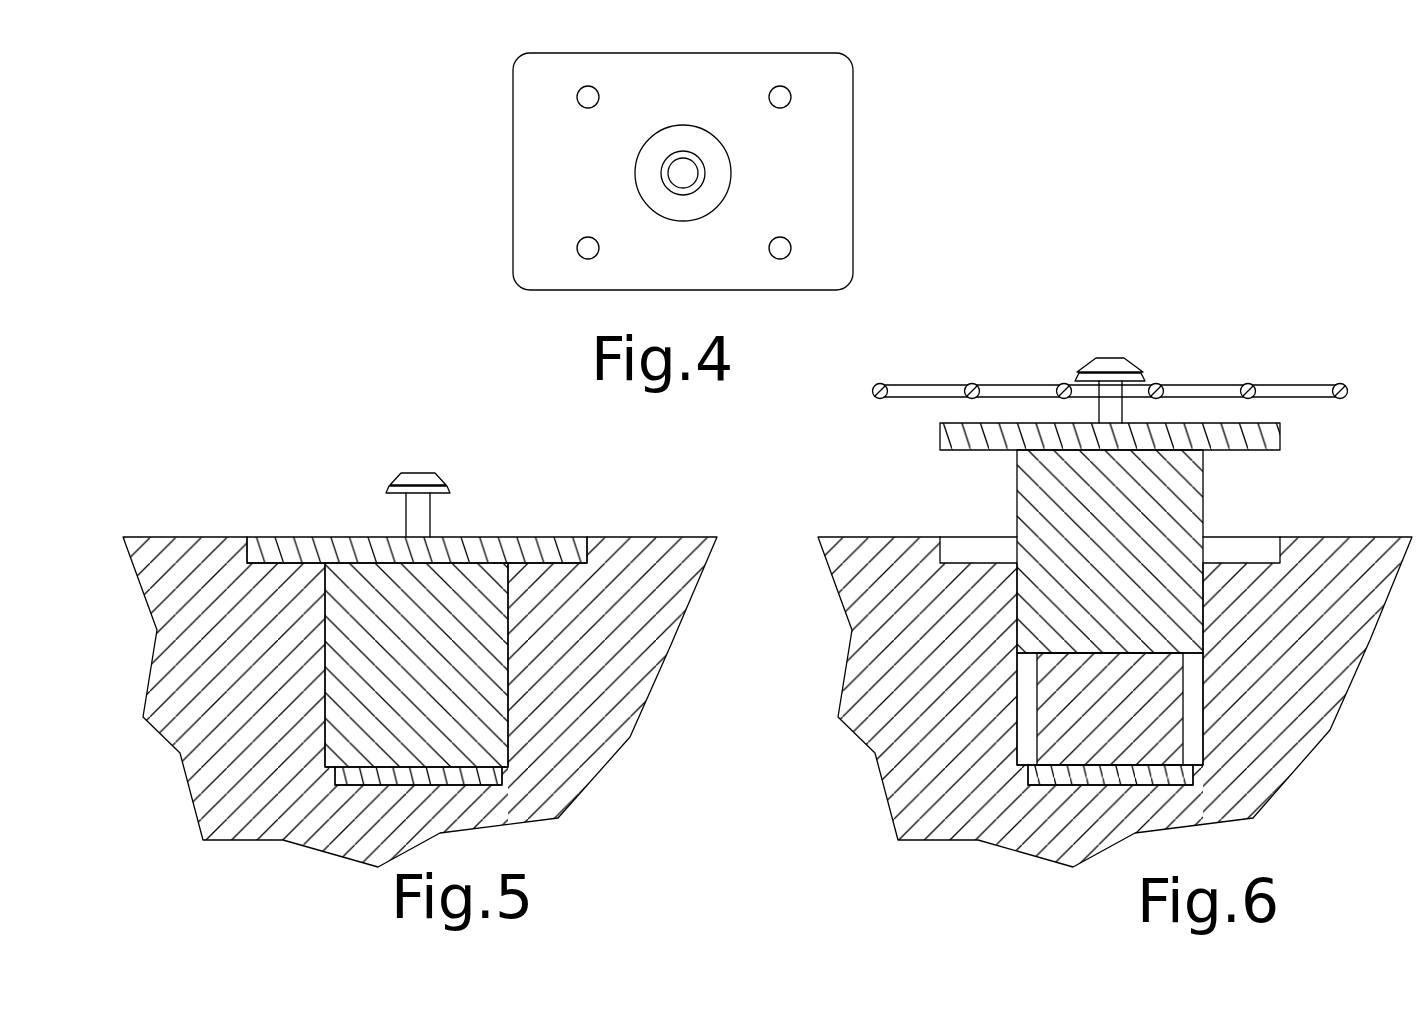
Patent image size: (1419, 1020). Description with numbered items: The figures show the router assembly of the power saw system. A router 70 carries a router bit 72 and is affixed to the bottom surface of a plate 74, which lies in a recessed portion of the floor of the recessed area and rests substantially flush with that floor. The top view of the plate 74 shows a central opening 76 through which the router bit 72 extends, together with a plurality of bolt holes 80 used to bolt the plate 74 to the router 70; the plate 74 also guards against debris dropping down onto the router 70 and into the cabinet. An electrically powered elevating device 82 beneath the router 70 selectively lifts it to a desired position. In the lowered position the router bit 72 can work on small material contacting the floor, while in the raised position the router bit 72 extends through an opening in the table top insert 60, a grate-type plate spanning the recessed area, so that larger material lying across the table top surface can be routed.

In FIG. 6, the table top insert 60 is at (1288, 388).
In FIG. 5, the router 70 is at (475, 698).
In FIG. 6, the router 70 is at (1157, 563).
In FIG. 4, the router bit 72 is at (683, 173).
In FIG. 5, the router bit 72 is at (417, 470).
In FIG. 6, the router bit 72 is at (1110, 357).
In FIG. 4, the plate 74 is at (855, 148).
In FIG. 5, the plate 74 is at (547, 550).
In FIG. 6, the plate 74 is at (955, 435).
In FIG. 4, the central opening 76 is at (672, 140).
In FIG. 4, the bolt holes 80 is at (588, 97).
In FIG. 5, the electrically powered elevating device 82 is at (480, 775).
In FIG. 6, the electrically powered elevating device 82 is at (1182, 773).